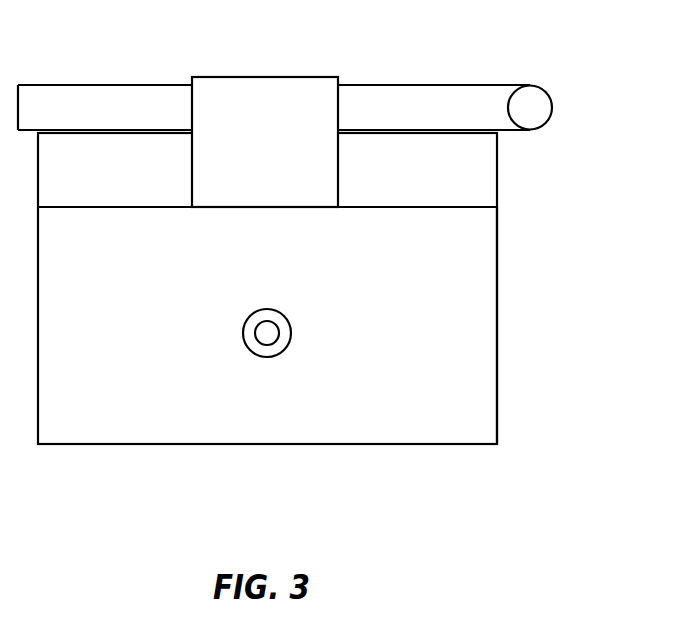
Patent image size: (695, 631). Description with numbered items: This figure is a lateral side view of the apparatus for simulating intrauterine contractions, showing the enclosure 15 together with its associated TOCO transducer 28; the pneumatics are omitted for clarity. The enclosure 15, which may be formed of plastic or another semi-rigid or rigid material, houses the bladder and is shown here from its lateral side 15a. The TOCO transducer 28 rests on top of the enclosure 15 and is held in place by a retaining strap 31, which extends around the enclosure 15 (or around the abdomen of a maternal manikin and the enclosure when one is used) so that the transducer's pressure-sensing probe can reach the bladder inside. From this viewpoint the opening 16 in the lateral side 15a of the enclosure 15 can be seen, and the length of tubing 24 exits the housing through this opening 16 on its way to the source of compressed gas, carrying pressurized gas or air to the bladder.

The enclosure 15 is at (497, 239).
The lateral side 15a is at (502, 333).
The opening 16 is at (280, 346).
The length of tubing 24 is at (267, 333).
The TOCO transducer 28 is at (430, 85).
The retaining strap 31 is at (263, 107).